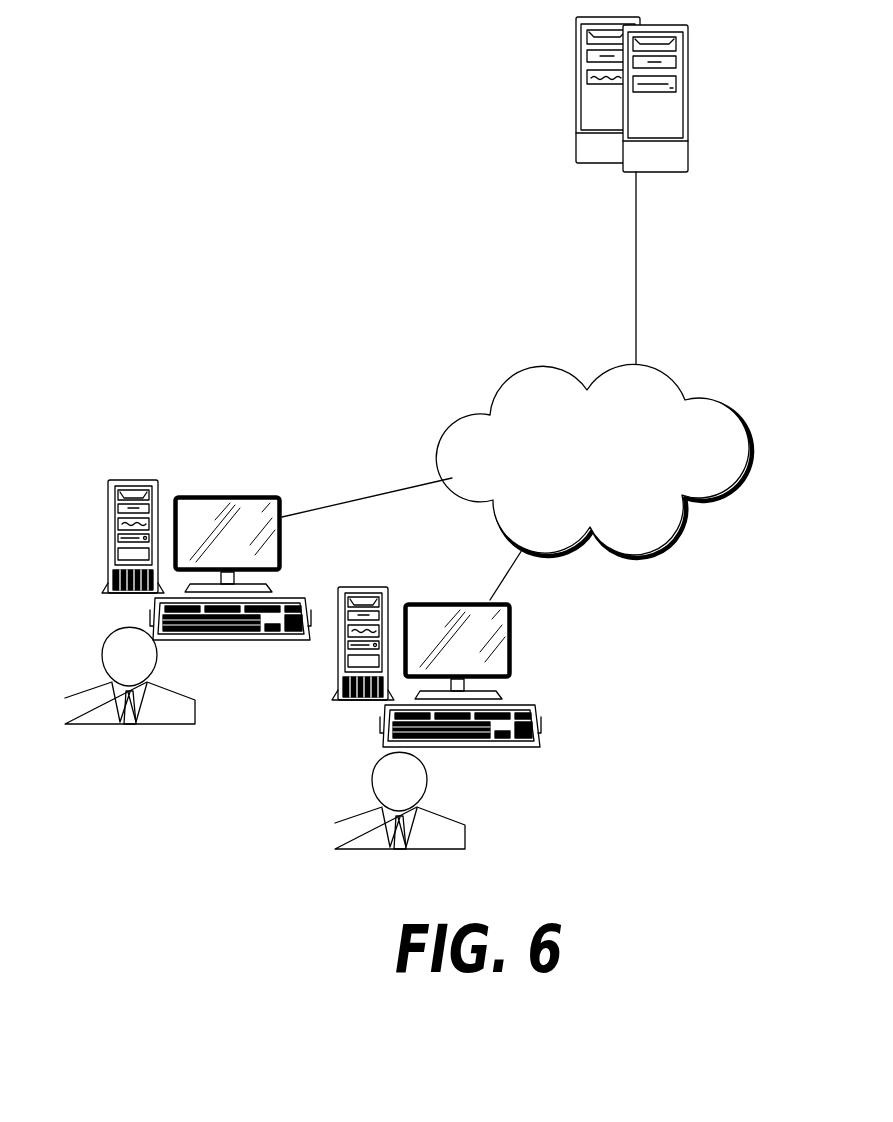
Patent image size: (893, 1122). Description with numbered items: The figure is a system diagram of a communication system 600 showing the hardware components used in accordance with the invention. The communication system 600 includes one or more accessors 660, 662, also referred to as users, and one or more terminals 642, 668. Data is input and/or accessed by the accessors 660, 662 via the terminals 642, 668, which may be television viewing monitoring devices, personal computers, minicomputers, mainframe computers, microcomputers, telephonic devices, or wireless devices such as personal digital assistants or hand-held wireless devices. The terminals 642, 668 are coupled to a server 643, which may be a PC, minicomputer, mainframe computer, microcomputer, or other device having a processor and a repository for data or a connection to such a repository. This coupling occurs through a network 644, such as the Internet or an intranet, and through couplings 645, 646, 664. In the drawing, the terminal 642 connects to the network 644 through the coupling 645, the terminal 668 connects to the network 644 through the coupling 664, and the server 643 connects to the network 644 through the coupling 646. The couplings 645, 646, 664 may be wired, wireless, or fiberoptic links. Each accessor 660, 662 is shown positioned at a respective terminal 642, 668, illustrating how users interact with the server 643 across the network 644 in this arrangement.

The communication system 600 is at (328, 184).
The server 643 is at (688, 75).
The coupling 646 is at (637, 276).
The network 644 is at (681, 541).
The coupling 645 is at (389, 488).
The terminal 642 is at (283, 545).
The coupling 664 is at (500, 573).
The terminal 668 is at (513, 648).
The accessor 660 is at (195, 707).
The accessor 662 is at (465, 828).